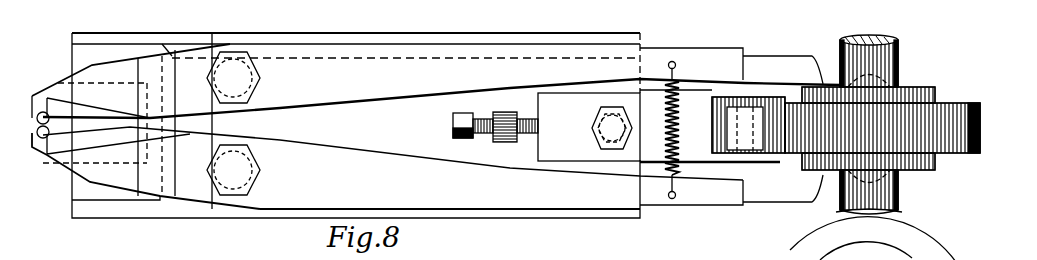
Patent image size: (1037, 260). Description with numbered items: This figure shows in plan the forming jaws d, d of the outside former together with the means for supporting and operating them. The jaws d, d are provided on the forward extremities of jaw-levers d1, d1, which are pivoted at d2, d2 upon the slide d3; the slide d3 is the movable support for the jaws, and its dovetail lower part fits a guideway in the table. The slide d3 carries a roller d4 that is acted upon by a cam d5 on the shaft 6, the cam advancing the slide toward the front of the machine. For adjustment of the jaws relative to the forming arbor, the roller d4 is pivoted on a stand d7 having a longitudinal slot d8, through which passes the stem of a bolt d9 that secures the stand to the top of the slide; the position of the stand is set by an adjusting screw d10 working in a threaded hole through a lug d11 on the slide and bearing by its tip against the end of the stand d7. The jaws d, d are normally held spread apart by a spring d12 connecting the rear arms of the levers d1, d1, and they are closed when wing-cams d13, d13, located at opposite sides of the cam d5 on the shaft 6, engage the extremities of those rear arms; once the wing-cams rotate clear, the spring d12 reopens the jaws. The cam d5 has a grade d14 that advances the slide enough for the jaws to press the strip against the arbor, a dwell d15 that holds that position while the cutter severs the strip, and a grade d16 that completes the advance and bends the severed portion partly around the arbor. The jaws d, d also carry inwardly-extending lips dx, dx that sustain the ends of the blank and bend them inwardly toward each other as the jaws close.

The forming jaws d is at (35, 95).
The inwardly-extending lips dx is at (37, 116).
The jaw-levers d1 is at (797, 259).
The pivots d2 is at (287, 76).
The slide d3 is at (160, 211).
The roller d4 is at (777, 150).
The cam d5 is at (960, 154).
The stand d7 is at (643, 99).
The longitudinal slot d8 is at (667, 123).
The bolt d9 is at (607, 259).
The adjusting screw d10 is at (485, 259).
The lug d11 is at (500, 145).
The spring d12 is at (685, 106).
The wing-cams d13 is at (919, 72).
The grade d14 is at (846, 232).
The dwell d15 is at (942, 232).
The grade d16 is at (960, 254).
The shaft 6 is at (901, 43).